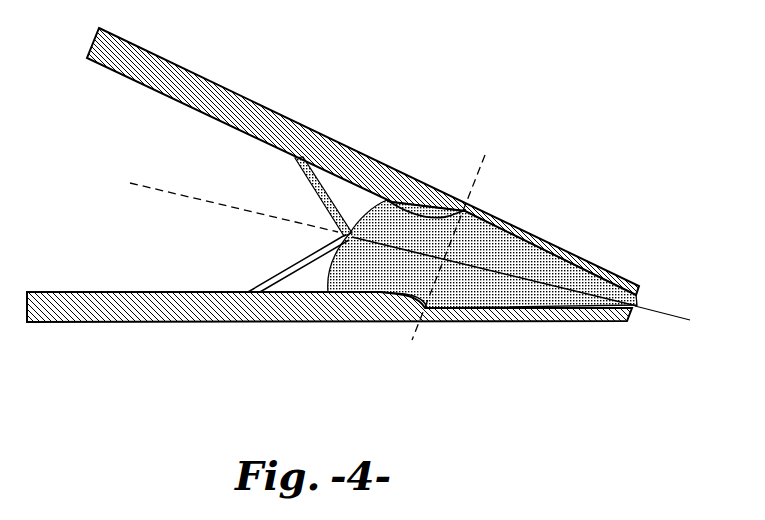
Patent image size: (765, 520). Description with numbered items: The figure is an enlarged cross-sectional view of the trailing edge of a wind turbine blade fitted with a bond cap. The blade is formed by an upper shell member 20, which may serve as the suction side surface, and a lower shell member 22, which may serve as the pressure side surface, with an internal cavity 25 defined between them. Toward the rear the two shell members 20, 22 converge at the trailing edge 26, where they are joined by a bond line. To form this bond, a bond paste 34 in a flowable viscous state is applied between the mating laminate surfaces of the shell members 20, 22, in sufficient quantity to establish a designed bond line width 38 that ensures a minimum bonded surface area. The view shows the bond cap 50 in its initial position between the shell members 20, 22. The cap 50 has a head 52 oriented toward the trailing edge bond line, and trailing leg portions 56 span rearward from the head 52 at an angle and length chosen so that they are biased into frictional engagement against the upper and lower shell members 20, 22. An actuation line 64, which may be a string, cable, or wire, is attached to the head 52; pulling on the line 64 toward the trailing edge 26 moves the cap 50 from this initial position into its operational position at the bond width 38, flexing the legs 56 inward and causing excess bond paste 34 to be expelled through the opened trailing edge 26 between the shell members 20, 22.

The upper shell member 20 is at (298, 120).
The lower shell member 22 is at (133, 323).
The internal cavity 25 is at (164, 245).
The trailing edge 26 is at (633, 254).
The bond paste 34 is at (490, 260).
The bond line width 38 is at (483, 158).
The bond cap 50 is at (256, 192).
The head 52 is at (382, 210).
The trailing leg portions 56 is at (322, 192).
The actuation lines 64 is at (673, 314).